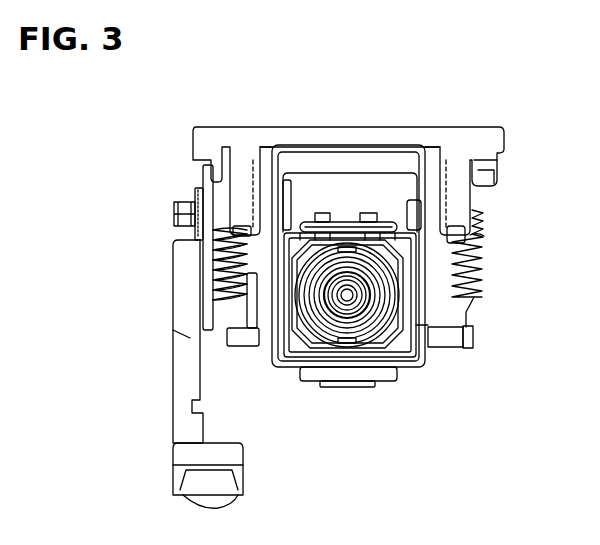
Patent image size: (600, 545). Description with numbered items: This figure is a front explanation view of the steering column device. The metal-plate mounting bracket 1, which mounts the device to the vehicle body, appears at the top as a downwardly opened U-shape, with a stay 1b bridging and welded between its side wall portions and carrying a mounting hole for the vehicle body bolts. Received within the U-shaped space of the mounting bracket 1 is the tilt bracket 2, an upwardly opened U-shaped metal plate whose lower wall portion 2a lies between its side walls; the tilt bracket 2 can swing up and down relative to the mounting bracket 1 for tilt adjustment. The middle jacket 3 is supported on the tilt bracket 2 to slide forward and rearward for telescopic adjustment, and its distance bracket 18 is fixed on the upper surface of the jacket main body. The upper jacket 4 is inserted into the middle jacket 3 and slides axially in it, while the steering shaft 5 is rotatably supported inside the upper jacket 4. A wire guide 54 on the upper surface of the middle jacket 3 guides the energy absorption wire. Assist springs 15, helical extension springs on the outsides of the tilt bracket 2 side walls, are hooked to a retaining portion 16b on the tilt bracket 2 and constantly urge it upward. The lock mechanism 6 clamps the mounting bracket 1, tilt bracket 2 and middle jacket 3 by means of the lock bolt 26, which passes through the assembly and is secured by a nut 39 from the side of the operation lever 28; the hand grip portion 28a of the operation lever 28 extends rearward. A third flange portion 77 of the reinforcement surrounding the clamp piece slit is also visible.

The mounting bracket 1 is at (456, 122).
The stay 1b is at (375, 140).
The tilt bracket 2 is at (436, 354).
The lower wall portion 2a is at (288, 381).
The middle jacket 3 is at (410, 362).
The upper jacket 4 is at (446, 328).
The steering shaft 5 is at (478, 254).
The lock mechanism 6 is at (183, 248).
The assist spring 15 is at (212, 284).
The retaining portion 16b is at (238, 348).
The distance bracket 18 is at (420, 200).
The lock bolt 26 is at (172, 214).
The operation lever 28 is at (170, 338).
The hand grip portion 28a is at (173, 470).
The nut 39 is at (195, 200).
The wire guide 54 is at (346, 222).
The third flange portion 77 is at (504, 244).